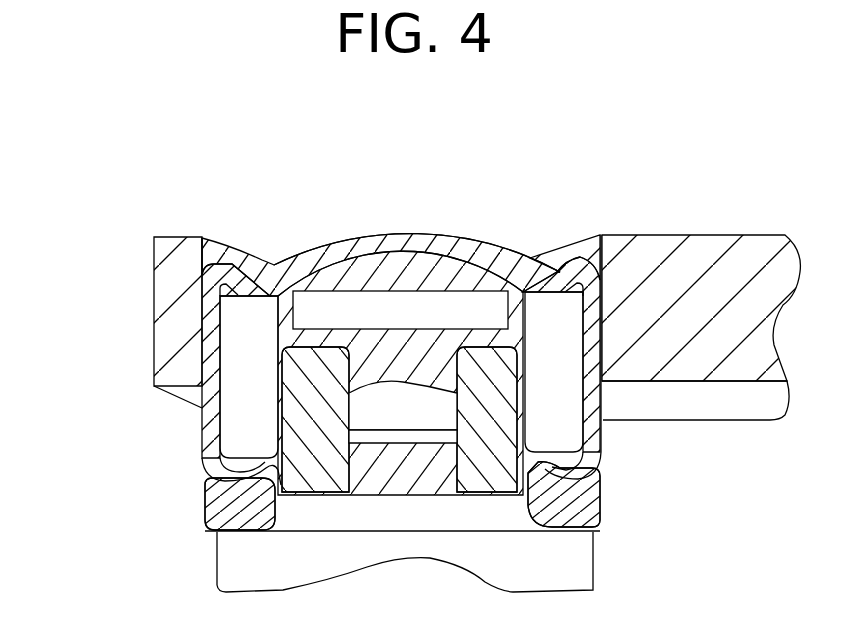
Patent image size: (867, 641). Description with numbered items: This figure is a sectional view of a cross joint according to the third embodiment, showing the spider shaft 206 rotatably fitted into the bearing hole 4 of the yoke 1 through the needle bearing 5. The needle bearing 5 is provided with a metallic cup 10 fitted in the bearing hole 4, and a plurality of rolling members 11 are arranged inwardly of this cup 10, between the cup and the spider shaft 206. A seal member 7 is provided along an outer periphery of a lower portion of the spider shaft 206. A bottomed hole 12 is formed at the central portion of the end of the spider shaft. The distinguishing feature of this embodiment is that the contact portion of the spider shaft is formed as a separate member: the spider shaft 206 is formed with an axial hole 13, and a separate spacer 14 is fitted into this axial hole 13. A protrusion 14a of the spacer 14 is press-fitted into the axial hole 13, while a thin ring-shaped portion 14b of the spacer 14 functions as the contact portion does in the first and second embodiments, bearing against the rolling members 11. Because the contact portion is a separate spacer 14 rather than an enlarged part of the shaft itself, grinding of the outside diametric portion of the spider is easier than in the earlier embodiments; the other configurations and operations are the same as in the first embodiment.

The yoke 1 is at (722, 236).
The bearing hole 4 is at (587, 237).
The needle bearing 5 is at (511, 248).
The seal member 7 is at (601, 501).
The metallic cup 10 is at (445, 237).
The rolling members (rollers) 11 is at (567, 428).
The bottomed hole 12 is at (382, 300).
The axial hole 13 is at (349, 403).
The spacer 14 is at (337, 285).
The protrusion 14a is at (433, 413).
The thin ring-shaped portion 14b is at (283, 307).
The spider shaft 206 is at (297, 427).